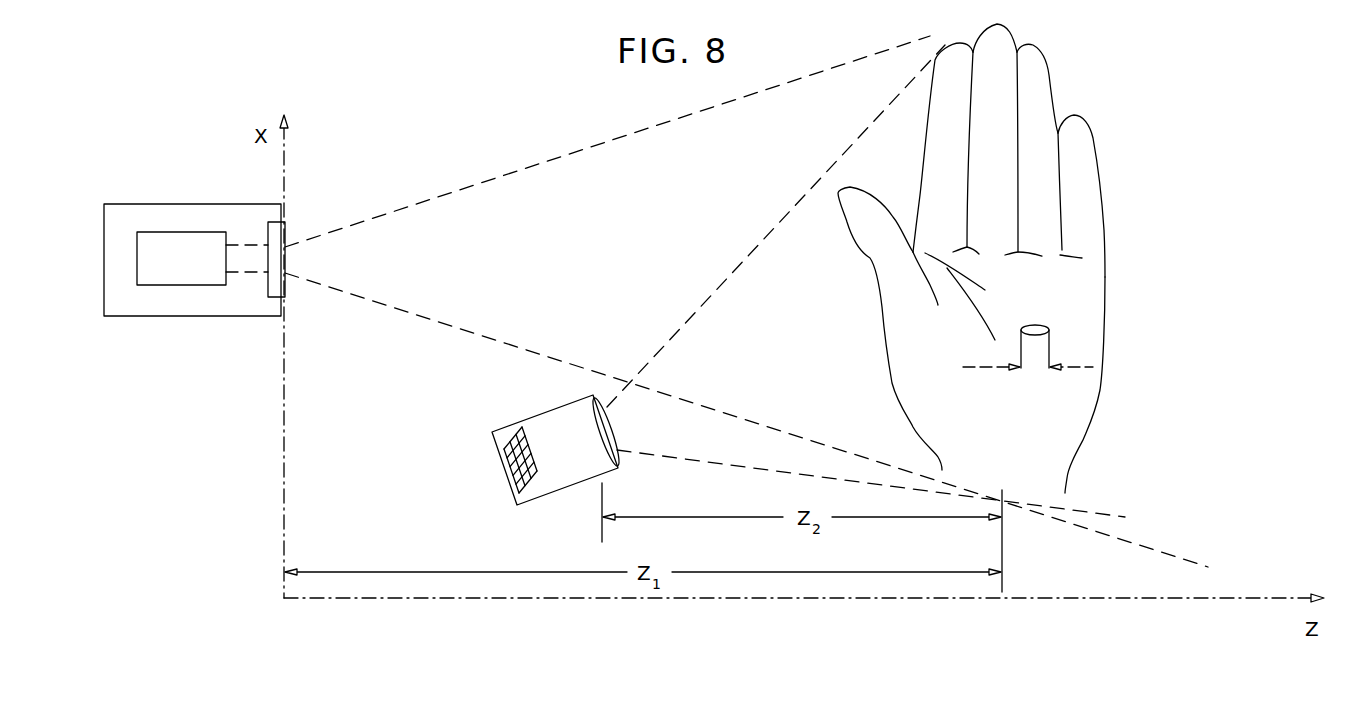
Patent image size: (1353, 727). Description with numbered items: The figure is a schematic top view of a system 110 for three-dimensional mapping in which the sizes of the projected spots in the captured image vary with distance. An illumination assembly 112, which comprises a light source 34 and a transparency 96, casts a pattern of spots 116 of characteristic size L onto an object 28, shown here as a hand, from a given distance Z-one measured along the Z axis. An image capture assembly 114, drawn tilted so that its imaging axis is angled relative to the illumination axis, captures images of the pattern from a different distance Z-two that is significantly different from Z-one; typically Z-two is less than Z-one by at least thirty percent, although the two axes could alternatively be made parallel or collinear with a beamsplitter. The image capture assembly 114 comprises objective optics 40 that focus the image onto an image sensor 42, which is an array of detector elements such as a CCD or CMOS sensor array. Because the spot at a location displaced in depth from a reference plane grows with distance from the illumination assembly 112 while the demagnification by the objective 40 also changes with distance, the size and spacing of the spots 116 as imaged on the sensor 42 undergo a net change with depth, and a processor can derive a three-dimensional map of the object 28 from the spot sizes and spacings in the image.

The system for 3D mapping 110 is at (188, 104).
The illumination assembly 112 is at (186, 204).
The light source 34 is at (180, 286).
The transparency 96 is at (287, 232).
The image capture assembly 114 is at (493, 445).
The image sensor 42 is at (510, 469).
The objective optics 40 is at (613, 425).
The object 28 is at (1080, 147).
The spots 116 is at (1047, 327).